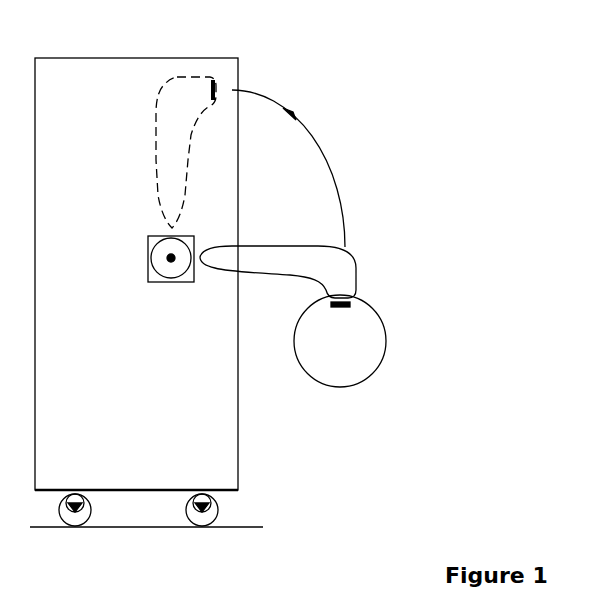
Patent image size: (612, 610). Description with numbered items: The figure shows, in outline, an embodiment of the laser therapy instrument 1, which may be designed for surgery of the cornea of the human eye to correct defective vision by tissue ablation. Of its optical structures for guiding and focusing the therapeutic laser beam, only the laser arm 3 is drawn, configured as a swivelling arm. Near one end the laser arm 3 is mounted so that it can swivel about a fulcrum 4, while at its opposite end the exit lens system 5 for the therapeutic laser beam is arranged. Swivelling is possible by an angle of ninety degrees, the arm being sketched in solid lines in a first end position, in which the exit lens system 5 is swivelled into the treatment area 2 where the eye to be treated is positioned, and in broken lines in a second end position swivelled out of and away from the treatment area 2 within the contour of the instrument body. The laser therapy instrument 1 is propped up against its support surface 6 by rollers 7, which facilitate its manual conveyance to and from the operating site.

The laser therapy instrument 1 is at (112, 68).
The treatment area 2 is at (343, 375).
The laser arm 3 is at (340, 265).
The fulcrum 4 is at (167, 257).
The exit lens system 5 is at (350, 306).
The support surface 6 is at (245, 527).
The rollers 7 is at (187, 508).